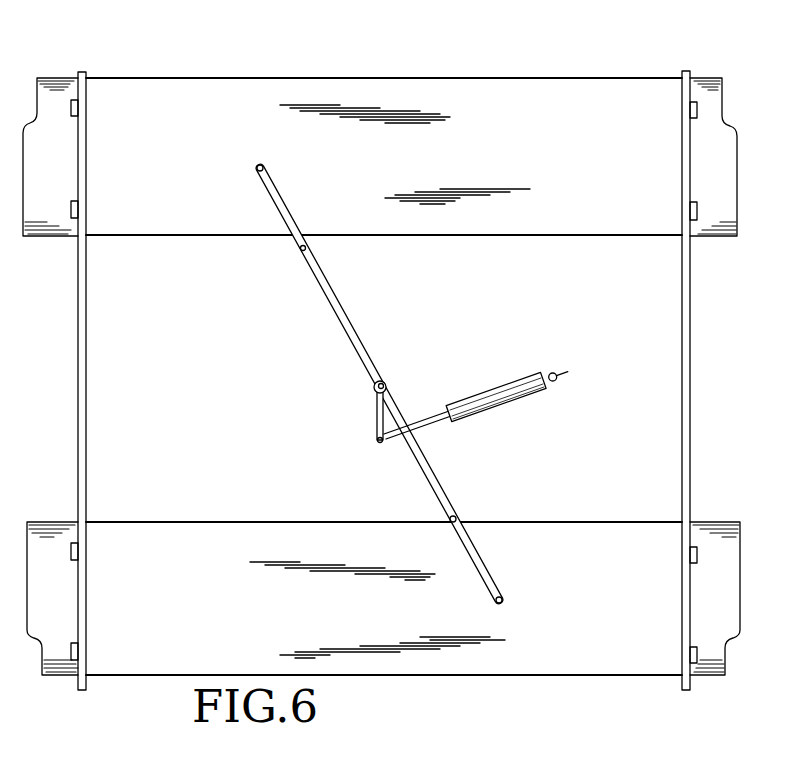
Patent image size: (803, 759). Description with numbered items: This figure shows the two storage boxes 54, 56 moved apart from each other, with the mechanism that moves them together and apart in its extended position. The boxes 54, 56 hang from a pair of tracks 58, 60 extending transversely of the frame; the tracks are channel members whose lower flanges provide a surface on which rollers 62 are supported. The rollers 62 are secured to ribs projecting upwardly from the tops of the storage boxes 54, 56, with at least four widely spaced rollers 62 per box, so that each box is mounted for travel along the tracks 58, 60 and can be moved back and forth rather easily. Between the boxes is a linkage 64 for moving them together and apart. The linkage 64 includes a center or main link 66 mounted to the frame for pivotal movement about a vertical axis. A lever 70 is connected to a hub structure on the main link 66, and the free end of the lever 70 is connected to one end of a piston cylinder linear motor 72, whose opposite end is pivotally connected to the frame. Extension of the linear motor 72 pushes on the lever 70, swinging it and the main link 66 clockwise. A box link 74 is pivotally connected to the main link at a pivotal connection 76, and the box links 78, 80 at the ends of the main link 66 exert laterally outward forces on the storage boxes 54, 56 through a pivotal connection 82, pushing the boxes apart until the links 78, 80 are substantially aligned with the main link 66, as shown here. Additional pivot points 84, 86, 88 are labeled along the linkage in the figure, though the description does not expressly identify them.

The storage box 54 is at (193, 532).
The storage box 56 is at (597, 237).
The track 58 is at (87, 322).
The track 60 is at (682, 325).
The roller 62 is at (72, 108).
The linkage 64 is at (336, 358).
The main link 66 is at (342, 300).
The lever 70 is at (376, 416).
The linear motor 72 is at (470, 421).
The box link 74 is at (381, 446).
The pivotal connection 76 is at (558, 378).
The box link 78 is at (288, 207).
The box link 80 is at (490, 572).
The pivotal connection 82 is at (300, 252).
The lower pin 84 is at (457, 516).
The upper end pin 86 is at (258, 164).
The lower end pin 88 is at (503, 605).